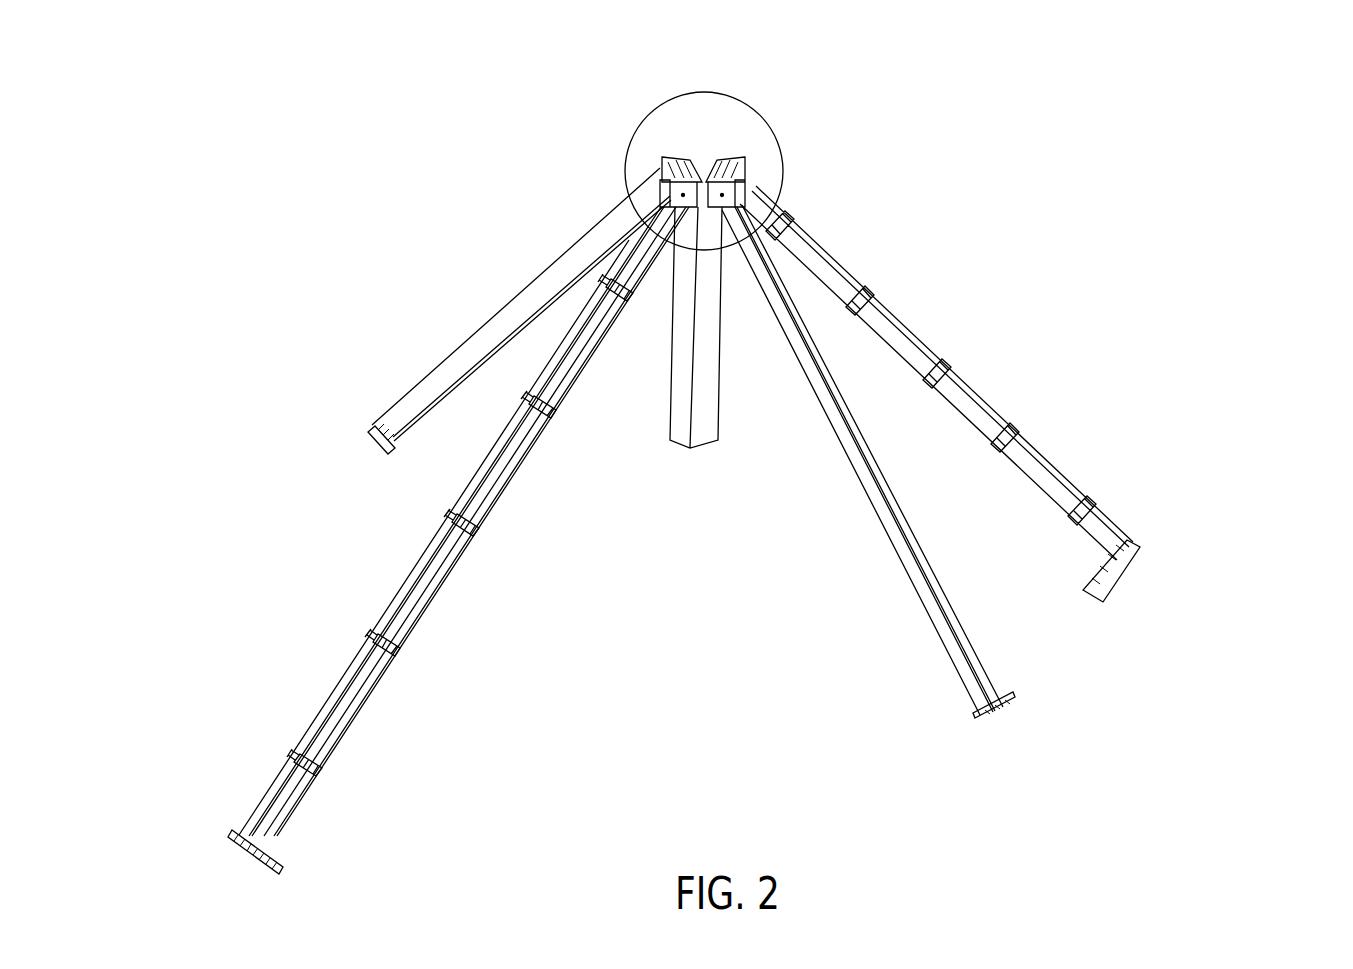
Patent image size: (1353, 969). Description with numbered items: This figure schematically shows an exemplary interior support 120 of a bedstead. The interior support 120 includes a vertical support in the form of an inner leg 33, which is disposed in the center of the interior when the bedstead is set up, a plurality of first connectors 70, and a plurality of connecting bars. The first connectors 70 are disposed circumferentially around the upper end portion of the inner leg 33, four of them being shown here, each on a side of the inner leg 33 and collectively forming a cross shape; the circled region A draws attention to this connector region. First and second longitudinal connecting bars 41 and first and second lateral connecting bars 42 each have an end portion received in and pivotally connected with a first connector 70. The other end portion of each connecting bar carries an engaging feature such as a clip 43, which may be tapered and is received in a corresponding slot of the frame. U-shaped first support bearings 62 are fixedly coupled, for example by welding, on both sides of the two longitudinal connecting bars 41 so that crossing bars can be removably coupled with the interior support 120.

The interior support 120 is at (268, 73).
The first connector 70 is at (664, 162).
The detail region A is at (770, 120).
The inner leg 33 is at (656, 256).
The longitudinal connecting bar 41 is at (847, 268).
The lateral connecting bar 42 is at (850, 413).
The clip 43 is at (1012, 714).
The first support bearing 62 is at (470, 535).